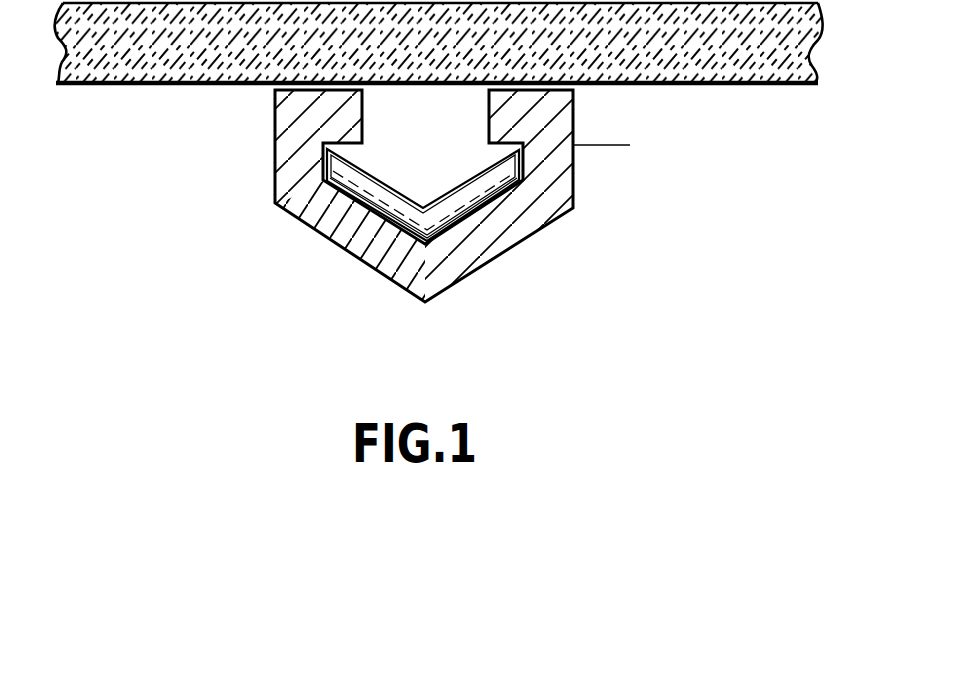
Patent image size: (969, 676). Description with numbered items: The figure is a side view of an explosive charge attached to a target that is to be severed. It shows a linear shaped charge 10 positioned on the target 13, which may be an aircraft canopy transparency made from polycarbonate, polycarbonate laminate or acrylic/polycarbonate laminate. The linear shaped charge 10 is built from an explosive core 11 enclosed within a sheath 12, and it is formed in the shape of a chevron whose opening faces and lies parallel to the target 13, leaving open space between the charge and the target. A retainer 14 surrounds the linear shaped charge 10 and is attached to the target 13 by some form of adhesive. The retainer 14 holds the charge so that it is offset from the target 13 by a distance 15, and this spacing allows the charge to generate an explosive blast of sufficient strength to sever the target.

The linear shaped charge 10 is at (509, 190).
The explosive core 11 is at (460, 203).
The sheath 12 is at (440, 232).
The target 13 is at (688, 70).
The retainer 14 is at (401, 250).
The distance 15 is at (607, 95).